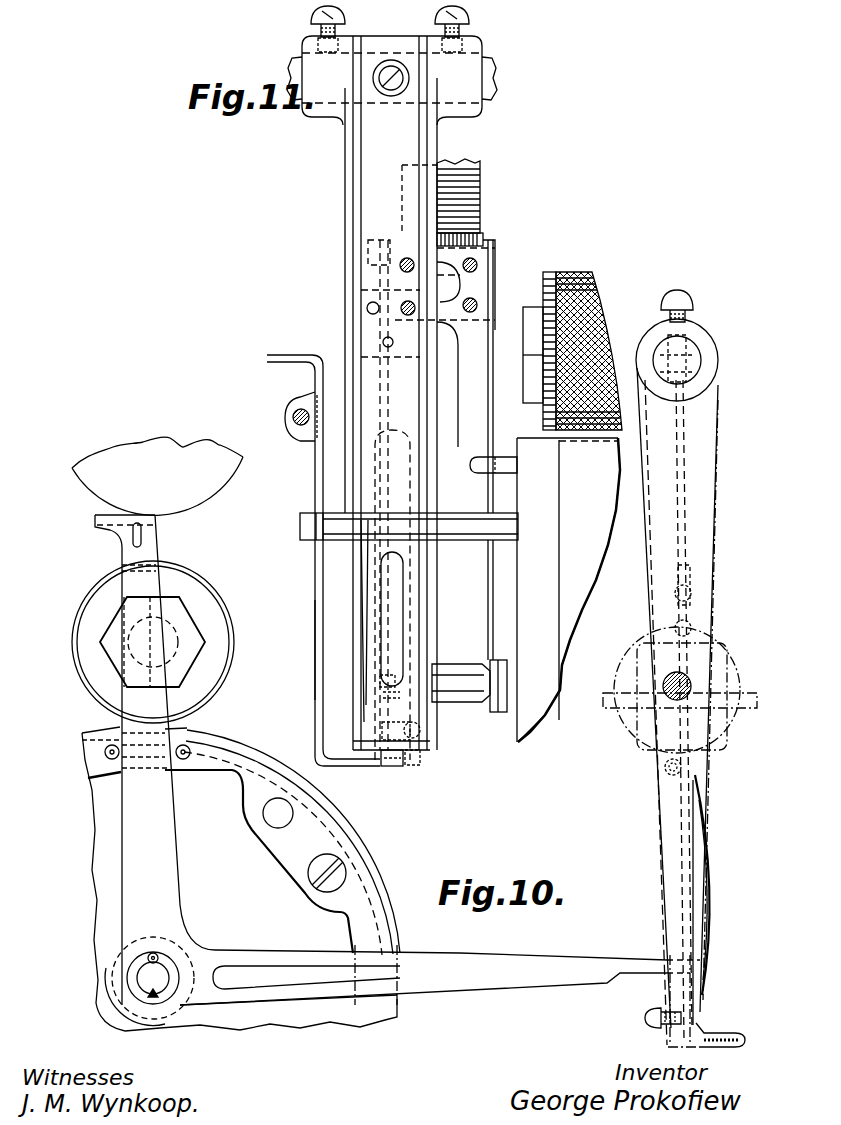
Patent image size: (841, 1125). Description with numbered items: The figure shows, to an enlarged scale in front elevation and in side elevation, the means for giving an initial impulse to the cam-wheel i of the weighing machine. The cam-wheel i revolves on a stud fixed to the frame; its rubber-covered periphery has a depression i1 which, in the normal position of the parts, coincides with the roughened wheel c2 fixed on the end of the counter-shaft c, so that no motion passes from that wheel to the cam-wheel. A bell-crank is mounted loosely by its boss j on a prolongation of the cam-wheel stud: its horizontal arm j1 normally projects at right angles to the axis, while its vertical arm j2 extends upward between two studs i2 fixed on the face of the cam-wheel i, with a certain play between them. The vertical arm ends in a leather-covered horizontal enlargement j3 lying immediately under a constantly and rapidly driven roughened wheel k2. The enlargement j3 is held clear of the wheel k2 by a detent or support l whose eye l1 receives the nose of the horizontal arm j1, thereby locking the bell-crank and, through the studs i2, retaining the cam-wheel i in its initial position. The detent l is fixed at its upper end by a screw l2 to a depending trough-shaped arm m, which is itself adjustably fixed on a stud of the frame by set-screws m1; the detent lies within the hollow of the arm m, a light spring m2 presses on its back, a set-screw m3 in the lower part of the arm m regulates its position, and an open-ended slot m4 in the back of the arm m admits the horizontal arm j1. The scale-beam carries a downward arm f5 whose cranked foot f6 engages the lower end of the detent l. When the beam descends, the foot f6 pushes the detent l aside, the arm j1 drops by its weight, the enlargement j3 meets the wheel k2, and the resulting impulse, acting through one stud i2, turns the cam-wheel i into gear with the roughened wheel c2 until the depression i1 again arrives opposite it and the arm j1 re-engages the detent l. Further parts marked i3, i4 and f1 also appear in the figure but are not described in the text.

In FIG. 11, the set-screws m1 is at (448, 10).
In FIG. 10, the set-screws m1 is at (681, 289).
In FIG. 11, the screw l2 is at (390, 96).
In FIG. 10, the screw l2 is at (690, 365).
In FIG. 11, the detent or support l is at (353, 150).
In FIG. 10, the detent or support l is at (682, 460).
In FIG. 11, the trough-shaped arm m is at (345, 194).
In FIG. 10, the trough-shaped arm m is at (648, 578).
In FIG. 11, the roughened wheel k2 is at (455, 165).
In FIG. 10, the roughened wheel k2 is at (93, 471).
In FIG. 11, the horizontal enlargement j3 is at (494, 243).
In FIG. 10, the horizontal enlargement j3 is at (95, 527).
In FIG. 11, the vertical arm of the bell-crank j2 is at (469, 333).
In FIG. 10, the vertical arm of the bell-crank j2 is at (178, 852).
In FIG. 11, the roughened wheel c2 is at (577, 272).
In FIG. 10, the roughened wheel c2 is at (220, 622).
In FIG. 10, the counter-shaft c is at (170, 634).
In FIG. 11, the studs i2 is at (492, 457).
In FIG. 10, the studs i2 is at (183, 757).
In FIG. 11, the open-ended slot m4 is at (378, 462).
In FIG. 11, the cross bar with screw holes i4 is at (301, 532).
In FIG. 10, the cross bar with screw holes i4 is at (278, 822).
In FIG. 11, the eye l1 is at (382, 588).
In FIG. 11, the light spring m2 is at (362, 618).
In FIG. 10, the light spring m2 is at (708, 898).
In FIG. 11, the downward projection or arm f5 is at (320, 660).
In FIG. 10, the downward projection or arm f5 is at (716, 740).
In FIG. 11, the horizontal arm of the bell-crank j1 is at (385, 672).
In FIG. 10, the horizontal arm of the bell-crank j1 is at (653, 960).
In FIG. 11, the boss j is at (497, 714).
In FIG. 10, the boss j is at (170, 962).
In FIG. 11, the slotted arm i3 is at (530, 724).
In FIG. 10, the slotted arm i3 is at (378, 1008).
In FIG. 11, the offset or foot f6 is at (400, 768).
In FIG. 10, the offset or foot f6 is at (732, 1033).
In FIG. 11, the set-screw m3 is at (410, 755).
In FIG. 10, the set-screw m3 is at (646, 1016).
In FIG. 10, the cam-wheel i is at (592, 545).
In FIG. 10, the pin f1 is at (684, 682).
In FIG. 10, the depression i1 is at (190, 745).